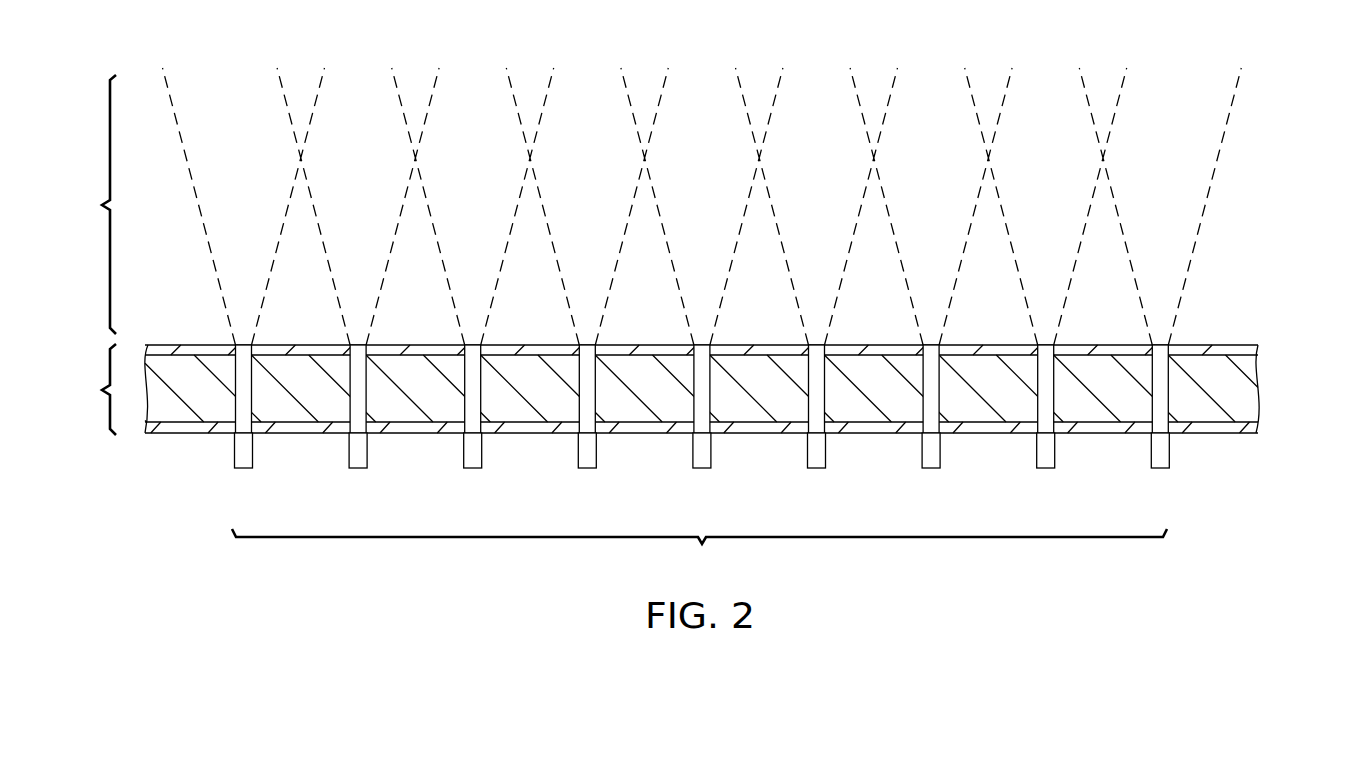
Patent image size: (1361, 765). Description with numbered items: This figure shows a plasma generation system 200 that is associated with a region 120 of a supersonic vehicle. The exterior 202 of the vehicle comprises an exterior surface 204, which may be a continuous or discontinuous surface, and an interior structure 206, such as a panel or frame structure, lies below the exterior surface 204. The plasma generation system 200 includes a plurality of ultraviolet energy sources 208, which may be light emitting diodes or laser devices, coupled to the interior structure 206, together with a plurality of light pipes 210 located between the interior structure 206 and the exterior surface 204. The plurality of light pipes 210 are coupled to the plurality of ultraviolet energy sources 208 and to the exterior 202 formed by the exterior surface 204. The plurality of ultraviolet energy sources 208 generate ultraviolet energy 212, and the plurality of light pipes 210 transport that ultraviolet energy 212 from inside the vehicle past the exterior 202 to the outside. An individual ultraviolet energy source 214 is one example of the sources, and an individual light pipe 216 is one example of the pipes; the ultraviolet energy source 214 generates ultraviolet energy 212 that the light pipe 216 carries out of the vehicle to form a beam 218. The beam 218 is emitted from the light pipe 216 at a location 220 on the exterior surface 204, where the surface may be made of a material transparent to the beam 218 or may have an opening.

The region 120 is at (694, 206).
The plasma generation system 200 is at (693, 417).
The exterior 202 is at (738, 386).
The exterior surface 204 is at (1260, 345).
The interior structure 206 is at (1260, 433).
The plurality of ultraviolet energy sources 208 is at (699, 552).
The plurality of light pipes 210 is at (85, 389).
The ultraviolet energy 212 is at (85, 204).
The ultraviolet energy source 214 is at (817, 469).
The light pipe 216 is at (1158, 403).
The beam 218 is at (1234, 108).
The location 220 is at (702, 401).